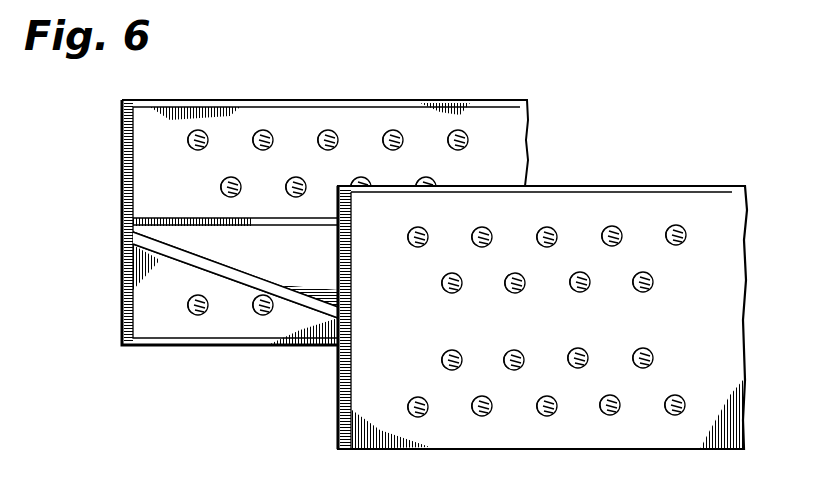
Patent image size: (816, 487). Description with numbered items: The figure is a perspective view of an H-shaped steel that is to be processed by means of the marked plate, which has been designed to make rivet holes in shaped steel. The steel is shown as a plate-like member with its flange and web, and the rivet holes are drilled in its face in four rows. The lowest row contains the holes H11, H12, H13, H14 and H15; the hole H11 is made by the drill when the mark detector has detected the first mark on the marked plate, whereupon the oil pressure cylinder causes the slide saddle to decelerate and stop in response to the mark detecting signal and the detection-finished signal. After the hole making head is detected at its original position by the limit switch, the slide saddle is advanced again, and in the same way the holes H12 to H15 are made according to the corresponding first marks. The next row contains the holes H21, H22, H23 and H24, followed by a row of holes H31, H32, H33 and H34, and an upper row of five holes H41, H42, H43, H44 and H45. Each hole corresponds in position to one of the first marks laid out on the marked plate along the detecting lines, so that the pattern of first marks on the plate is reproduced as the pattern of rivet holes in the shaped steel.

The hole H11 is at (418, 393).
The hole H12 is at (483, 393).
The hole H13 is at (548, 393).
The hole H14 is at (611, 392).
The hole H15 is at (676, 392).
The hole H21 in code plate H21 is at (452, 345).
The hole H22 in code plate H22 is at (514, 345).
The hole H23 in code plate H23 is at (579, 344).
The hole H24 in code plate H24 is at (643, 344).
The hole H31 in code plate H31 is at (452, 270).
The hole H32 in code plate H32 is at (515, 270).
The hole H33 in code plate H33 is at (580, 269).
The hole H34 in code plate H34 is at (644, 269).
The hole H41 in code plate H41 is at (420, 222).
The hole H42 in code plate H42 is at (484, 222).
The hole H43 in code plate H43 is at (549, 222).
The hole H44 in code plate H44 is at (613, 222).
The hole H45 in code plate H45 is at (677, 221).